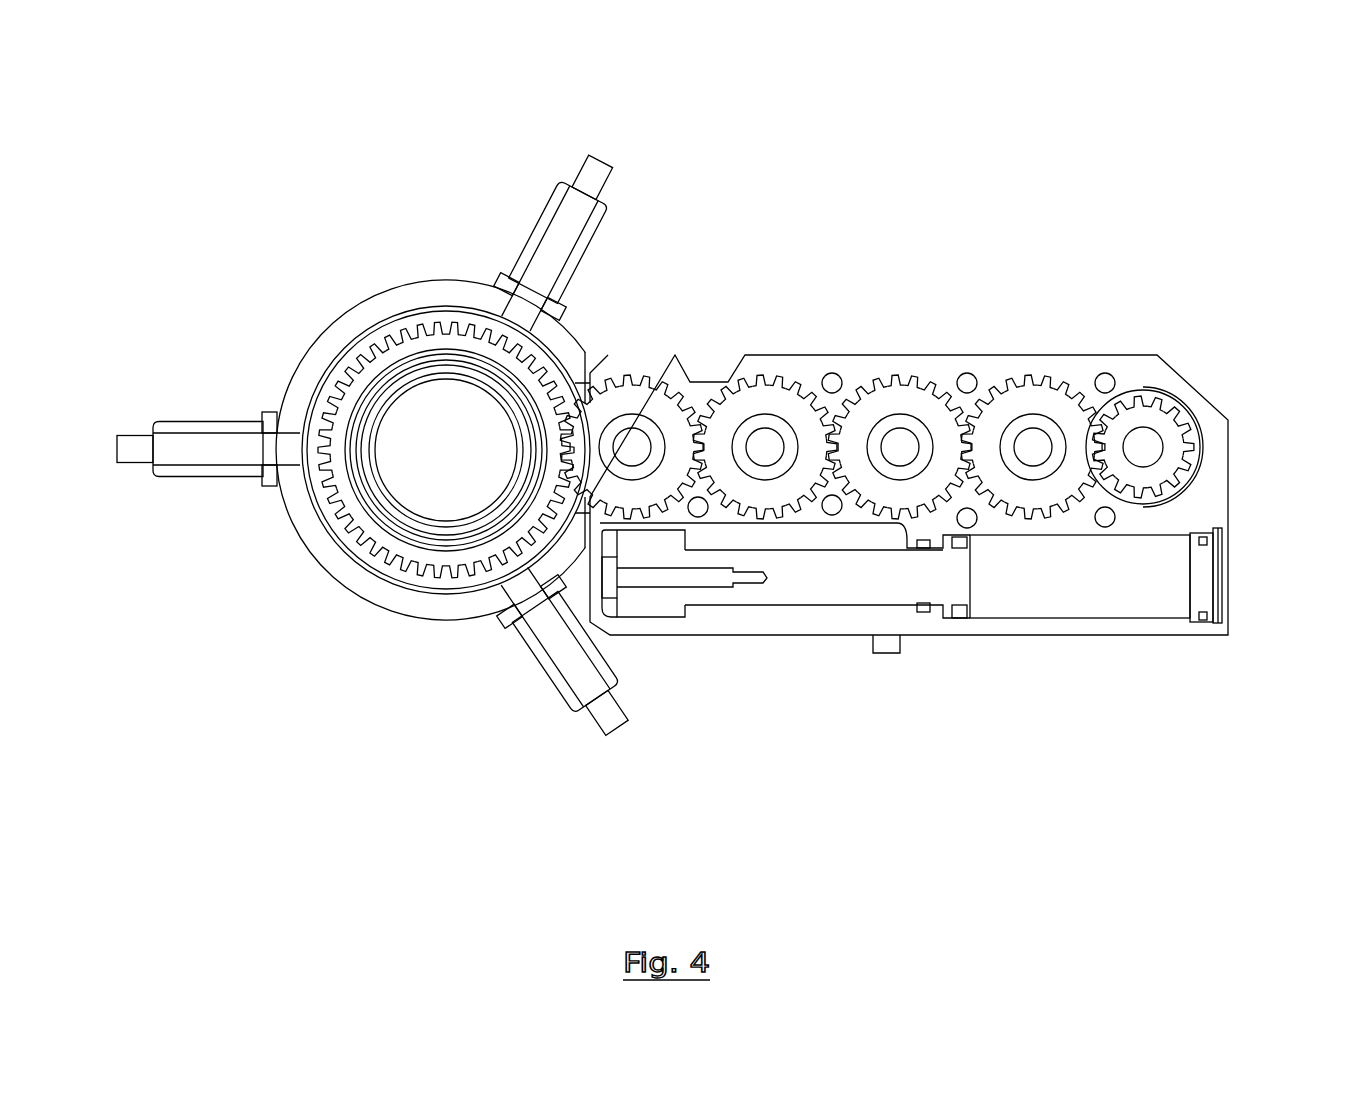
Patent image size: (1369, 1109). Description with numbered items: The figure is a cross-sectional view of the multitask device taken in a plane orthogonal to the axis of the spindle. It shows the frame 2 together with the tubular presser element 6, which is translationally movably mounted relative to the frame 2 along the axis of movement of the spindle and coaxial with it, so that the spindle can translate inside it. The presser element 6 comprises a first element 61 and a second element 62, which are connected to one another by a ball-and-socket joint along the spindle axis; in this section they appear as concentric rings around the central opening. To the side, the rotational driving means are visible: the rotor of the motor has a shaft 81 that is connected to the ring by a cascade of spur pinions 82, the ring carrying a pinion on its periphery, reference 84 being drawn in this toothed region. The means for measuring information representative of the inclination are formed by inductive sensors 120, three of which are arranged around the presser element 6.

The frame 2 is at (1197, 507).
The presser element 6 is at (313, 599).
The first element 61 is at (403, 530).
The second element 62 is at (373, 403).
The shaft 81 is at (1148, 455).
The spur pinions 82 is at (387, 340).
The ring gear 84 is at (457, 537).
The inductive sensors 120 is at (571, 200).